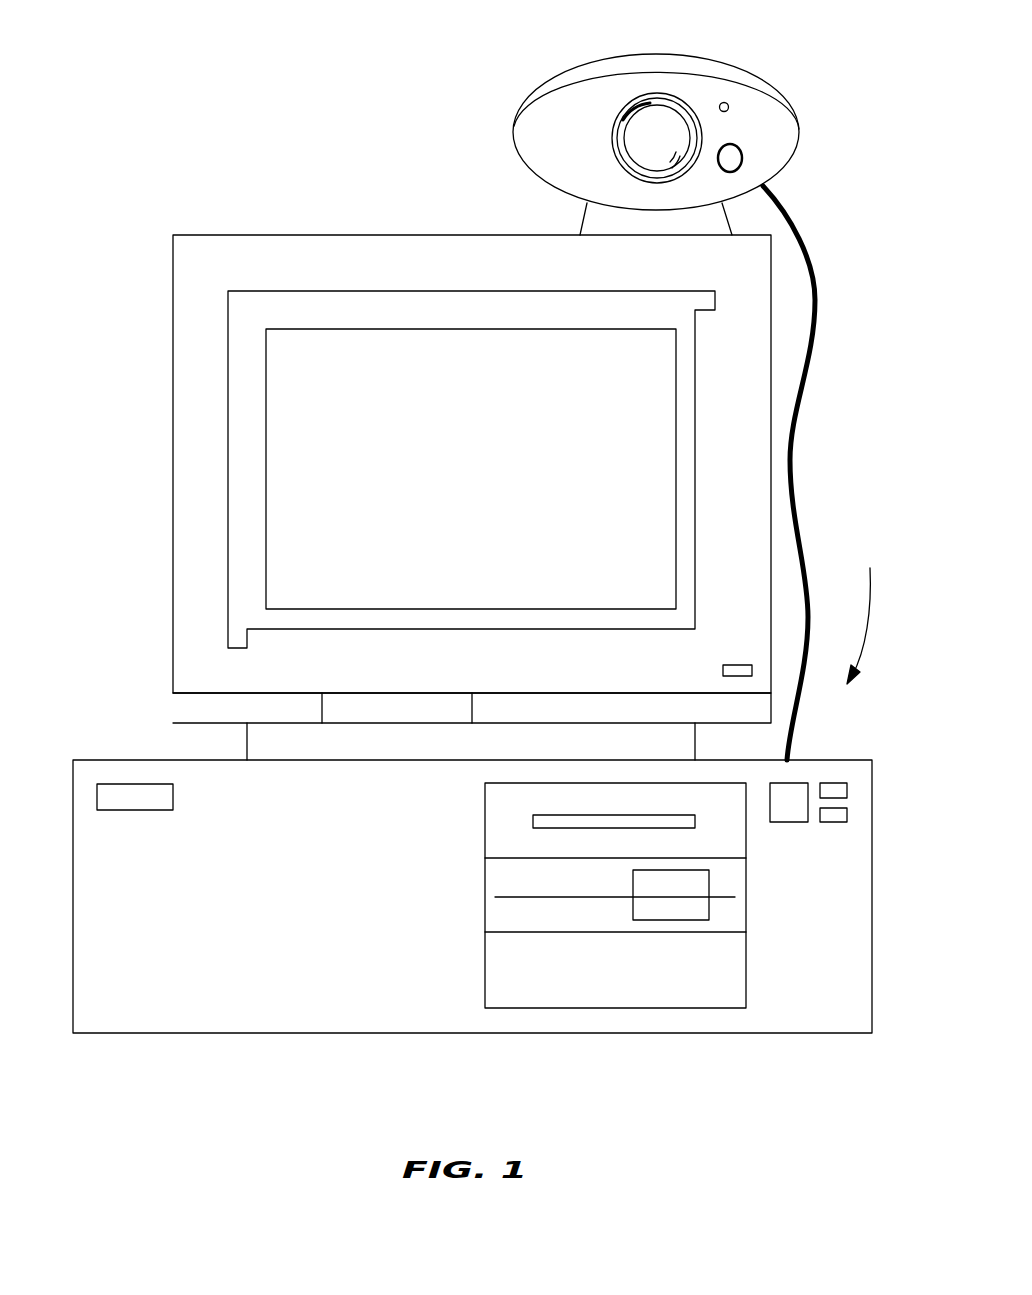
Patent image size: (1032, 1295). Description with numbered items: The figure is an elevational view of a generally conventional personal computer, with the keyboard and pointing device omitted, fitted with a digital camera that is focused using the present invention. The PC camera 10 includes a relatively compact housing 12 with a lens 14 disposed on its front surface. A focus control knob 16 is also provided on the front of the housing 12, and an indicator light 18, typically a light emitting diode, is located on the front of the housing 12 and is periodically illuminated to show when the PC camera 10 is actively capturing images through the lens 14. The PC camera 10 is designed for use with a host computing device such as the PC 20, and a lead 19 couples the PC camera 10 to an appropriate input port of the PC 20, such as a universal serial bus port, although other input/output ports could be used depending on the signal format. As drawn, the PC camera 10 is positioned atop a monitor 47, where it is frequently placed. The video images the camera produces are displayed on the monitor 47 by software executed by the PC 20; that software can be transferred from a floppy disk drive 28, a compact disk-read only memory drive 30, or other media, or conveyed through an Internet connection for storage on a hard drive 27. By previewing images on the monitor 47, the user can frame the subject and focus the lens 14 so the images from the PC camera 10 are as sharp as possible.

The PC camera 10 is at (386, 149).
The housing 12 is at (732, 72).
The lens 14 is at (643, 100).
The focus control knob 16 is at (744, 156).
The indicator light 18 is at (729, 107).
The lead 19 is at (808, 245).
The PC 20 is at (148, 765).
The hard drive 27 is at (490, 963).
The floppy disk drive 28 is at (490, 824).
The compact disk-read only memory (CD-ROM) drive 30 is at (490, 889).
The monitor 47 is at (275, 467).